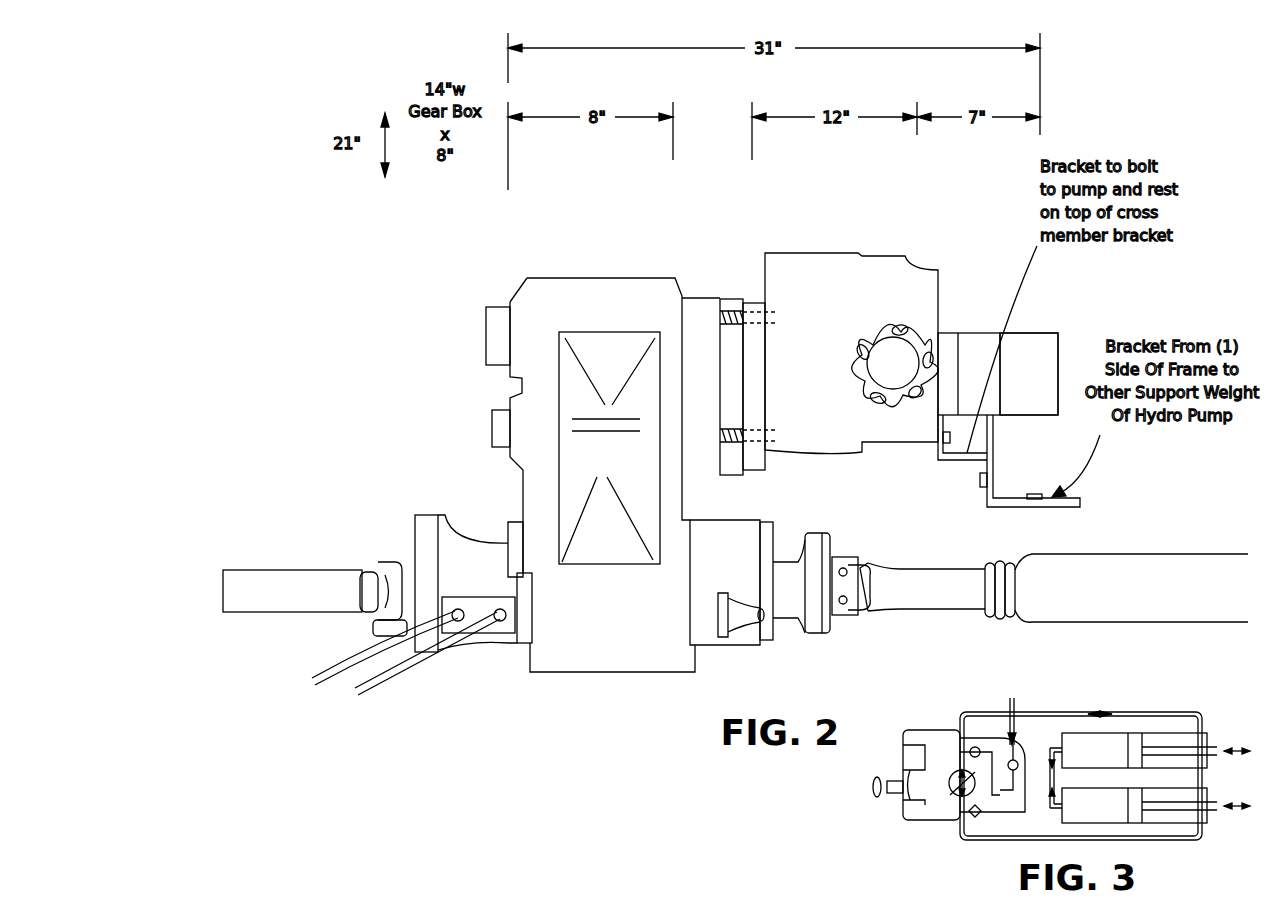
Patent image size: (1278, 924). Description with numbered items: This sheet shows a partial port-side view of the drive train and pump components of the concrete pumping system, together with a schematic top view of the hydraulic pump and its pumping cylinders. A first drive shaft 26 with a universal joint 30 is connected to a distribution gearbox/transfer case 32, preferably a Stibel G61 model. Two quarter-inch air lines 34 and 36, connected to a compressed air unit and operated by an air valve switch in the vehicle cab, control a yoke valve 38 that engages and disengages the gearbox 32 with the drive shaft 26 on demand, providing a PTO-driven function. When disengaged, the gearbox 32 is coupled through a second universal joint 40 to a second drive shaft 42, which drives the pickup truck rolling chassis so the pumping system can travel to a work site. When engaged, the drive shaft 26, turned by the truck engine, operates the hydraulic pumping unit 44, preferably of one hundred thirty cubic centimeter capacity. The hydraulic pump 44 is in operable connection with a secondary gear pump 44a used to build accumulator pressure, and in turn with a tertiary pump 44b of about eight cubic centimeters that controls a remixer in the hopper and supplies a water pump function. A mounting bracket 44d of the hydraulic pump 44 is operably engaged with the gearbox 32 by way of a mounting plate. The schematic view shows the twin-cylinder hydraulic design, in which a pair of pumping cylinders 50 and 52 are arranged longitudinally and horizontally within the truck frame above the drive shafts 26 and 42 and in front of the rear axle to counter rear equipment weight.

In FIG. 2, the first drive shaft 26 is at (278, 567).
In FIG. 2, the universal joint 30 is at (373, 560).
In FIG. 2, the distribution gearbox/transfer case 32 is at (630, 673).
In FIG. 2, the air line 34 is at (352, 668).
In FIG. 2, the air line 36 is at (427, 672).
In FIG. 2, the yoke valve 38 is at (503, 645).
In FIG. 2, the second universal joint 40 is at (860, 608).
In FIG. 2, the second drive shaft 42 is at (1100, 553).
In FIG. 2, the hydraulic pumping unit 44 is at (940, 297).
In FIG. 2, the secondary gear pump 44a is at (992, 333).
In FIG. 2, the tertiary pump 44b is at (1022, 405).
In FIG. 2, the mounting bracket 44d is at (743, 305).
In FIG. 3, the pumping cylinder 50 is at (1160, 737).
In FIG. 3, the pumping cylinder 52 is at (1163, 823).